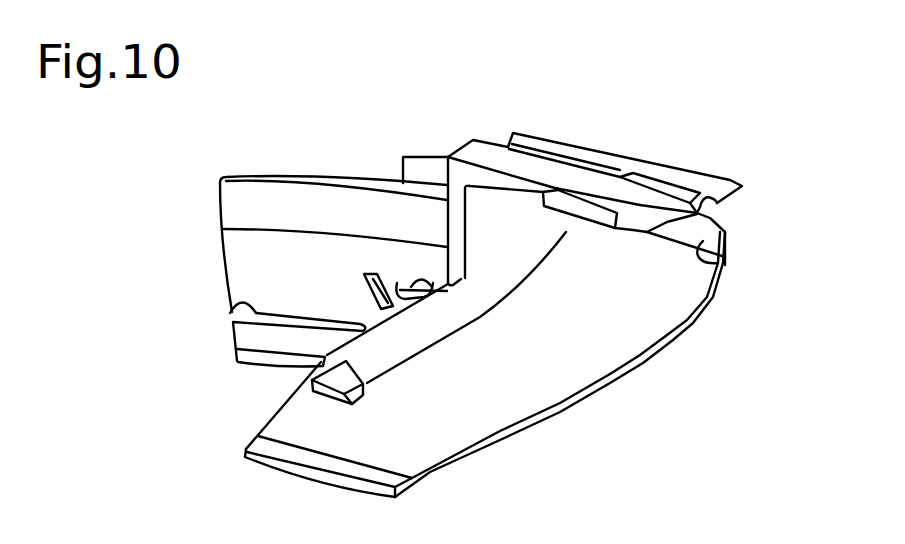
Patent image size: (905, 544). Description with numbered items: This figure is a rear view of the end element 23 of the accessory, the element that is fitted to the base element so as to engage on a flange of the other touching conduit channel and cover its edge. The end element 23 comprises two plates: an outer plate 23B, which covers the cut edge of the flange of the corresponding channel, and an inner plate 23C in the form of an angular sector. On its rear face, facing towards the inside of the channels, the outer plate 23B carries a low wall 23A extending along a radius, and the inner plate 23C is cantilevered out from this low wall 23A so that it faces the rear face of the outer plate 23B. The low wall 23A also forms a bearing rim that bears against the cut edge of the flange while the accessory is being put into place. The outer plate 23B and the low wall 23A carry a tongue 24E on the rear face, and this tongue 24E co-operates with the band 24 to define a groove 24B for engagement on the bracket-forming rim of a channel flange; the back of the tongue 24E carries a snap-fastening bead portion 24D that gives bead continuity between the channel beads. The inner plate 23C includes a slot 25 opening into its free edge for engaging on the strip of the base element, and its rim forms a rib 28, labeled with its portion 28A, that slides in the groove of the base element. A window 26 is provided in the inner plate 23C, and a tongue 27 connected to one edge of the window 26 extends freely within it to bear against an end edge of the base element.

The end element 23 is at (675, 338).
The low wall 23A is at (389, 358).
The outer plate 23B is at (503, 433).
The inner plate 23C is at (237, 280).
The band 24 is at (722, 270).
The groove 24B is at (717, 213).
The snap-fastening bead portion 24D is at (650, 181).
The tongue 24E is at (563, 143).
The slot 25 is at (228, 308).
The window 26 is at (435, 295).
The tongue 27 is at (367, 268).
The rib 28 is at (232, 200).
The top face of curved block 28A is at (301, 177).